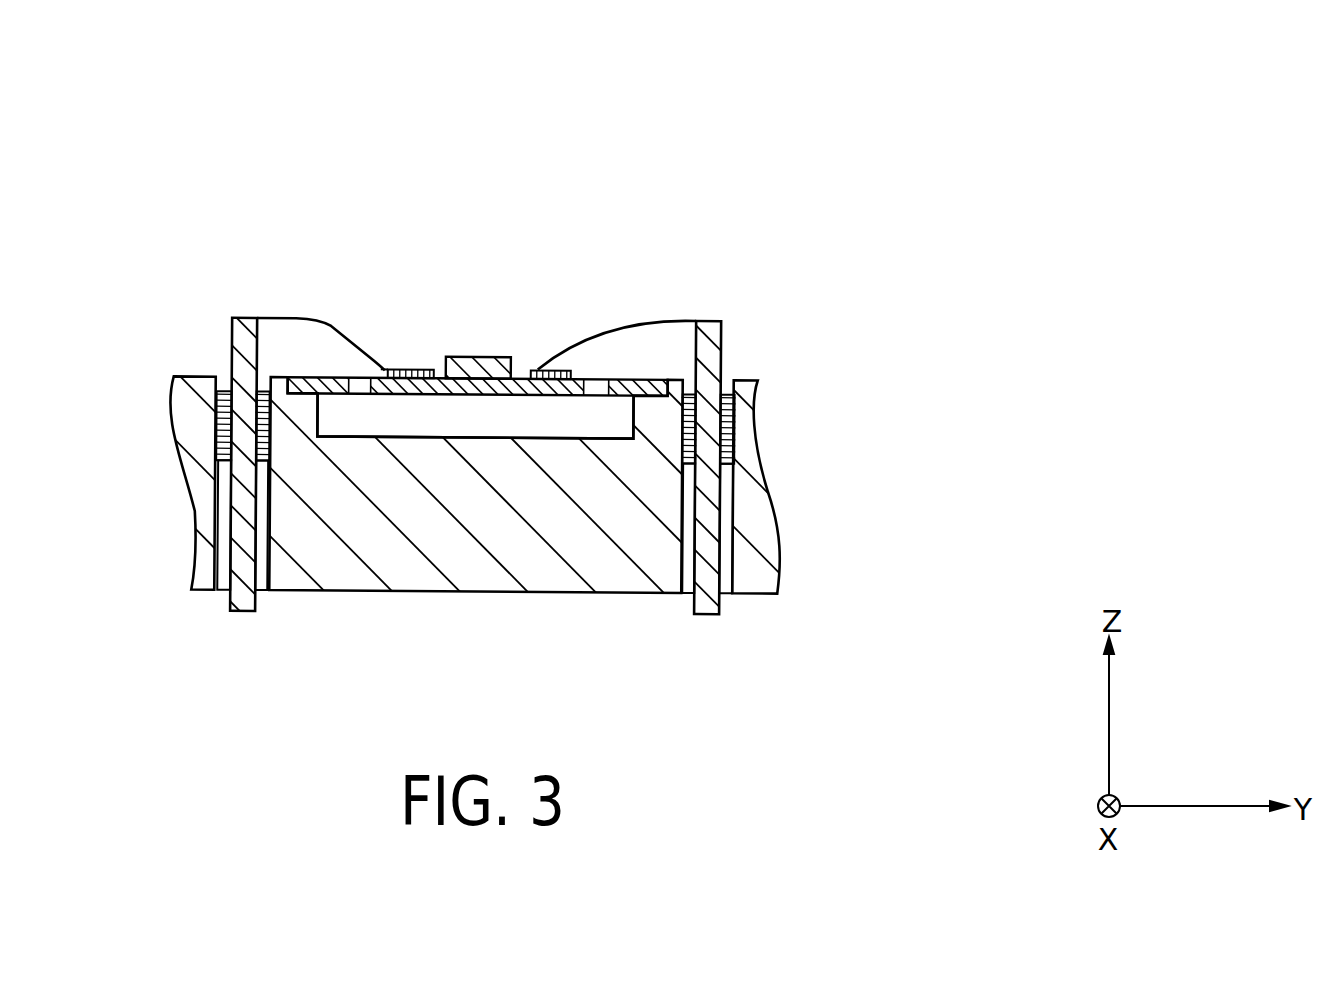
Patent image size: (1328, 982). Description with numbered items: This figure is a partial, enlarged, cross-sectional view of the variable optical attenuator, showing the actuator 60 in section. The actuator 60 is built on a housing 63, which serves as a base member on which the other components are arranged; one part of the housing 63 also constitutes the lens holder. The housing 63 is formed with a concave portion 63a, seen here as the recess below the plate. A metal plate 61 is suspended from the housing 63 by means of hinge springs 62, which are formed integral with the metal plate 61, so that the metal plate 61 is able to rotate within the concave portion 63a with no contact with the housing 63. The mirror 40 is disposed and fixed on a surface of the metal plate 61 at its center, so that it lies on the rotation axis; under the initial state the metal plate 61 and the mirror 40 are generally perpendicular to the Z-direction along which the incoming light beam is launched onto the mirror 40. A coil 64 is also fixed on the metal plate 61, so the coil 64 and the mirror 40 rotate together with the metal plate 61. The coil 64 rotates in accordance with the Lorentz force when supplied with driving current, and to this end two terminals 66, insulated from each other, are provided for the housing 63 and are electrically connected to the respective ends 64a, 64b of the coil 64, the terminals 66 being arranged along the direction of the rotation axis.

The actuator 60 is at (600, 189).
The metal plate 61 is at (380, 377).
The hinge springs 62 is at (318, 384).
The housing 63 is at (572, 547).
The concave portion 63a is at (482, 418).
The coil 64 is at (410, 372).
The end of the coil 64a is at (633, 322).
The end of the coil 64b is at (280, 318).
The terminals 66 is at (238, 553).
The mirror 40 is at (477, 357).